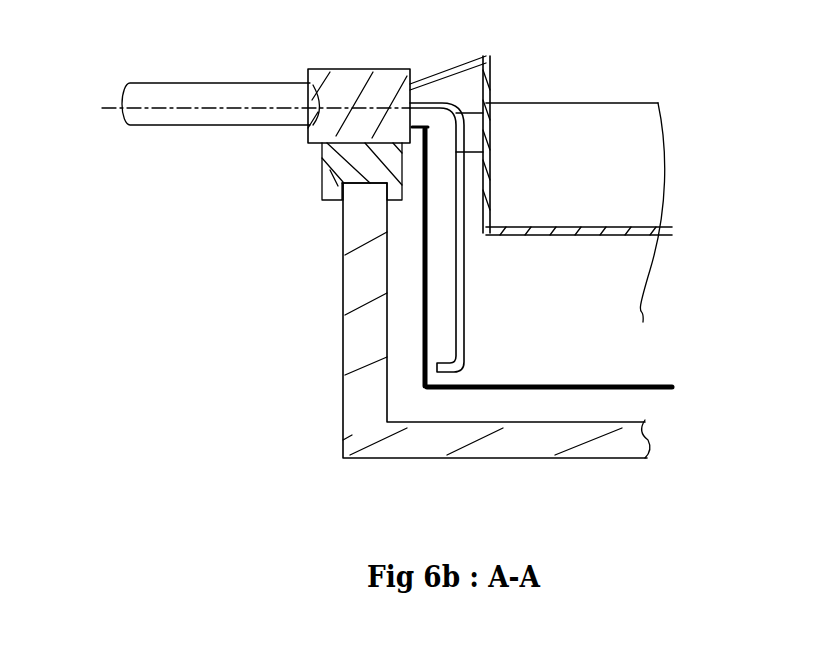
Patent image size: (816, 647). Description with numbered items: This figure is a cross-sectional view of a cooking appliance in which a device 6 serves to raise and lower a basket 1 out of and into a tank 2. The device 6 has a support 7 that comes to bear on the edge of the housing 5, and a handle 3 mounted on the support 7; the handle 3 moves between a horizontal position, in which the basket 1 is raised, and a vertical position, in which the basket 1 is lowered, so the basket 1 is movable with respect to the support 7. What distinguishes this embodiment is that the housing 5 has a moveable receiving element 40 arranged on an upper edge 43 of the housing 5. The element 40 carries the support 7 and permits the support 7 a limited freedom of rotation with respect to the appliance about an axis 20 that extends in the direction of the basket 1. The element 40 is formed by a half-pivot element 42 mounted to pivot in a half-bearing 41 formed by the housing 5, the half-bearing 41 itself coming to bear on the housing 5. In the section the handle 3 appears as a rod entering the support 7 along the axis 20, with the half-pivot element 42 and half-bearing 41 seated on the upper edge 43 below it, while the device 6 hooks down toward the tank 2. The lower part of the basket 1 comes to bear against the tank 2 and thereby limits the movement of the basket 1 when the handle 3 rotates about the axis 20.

The basket 1 is at (590, 160).
The tank 2 is at (603, 384).
The handle 3 is at (166, 92).
The housing 5 is at (362, 353).
The device for raising and lowering the basket 6 is at (418, 57).
The support 7 is at (337, 120).
The axis 20 is at (203, 108).
The moveable receiving element 40 is at (290, 210).
The half-bearing 41 is at (365, 185).
The half-pivot element 42 is at (338, 186).
The upper edge 43 is at (365, 220).